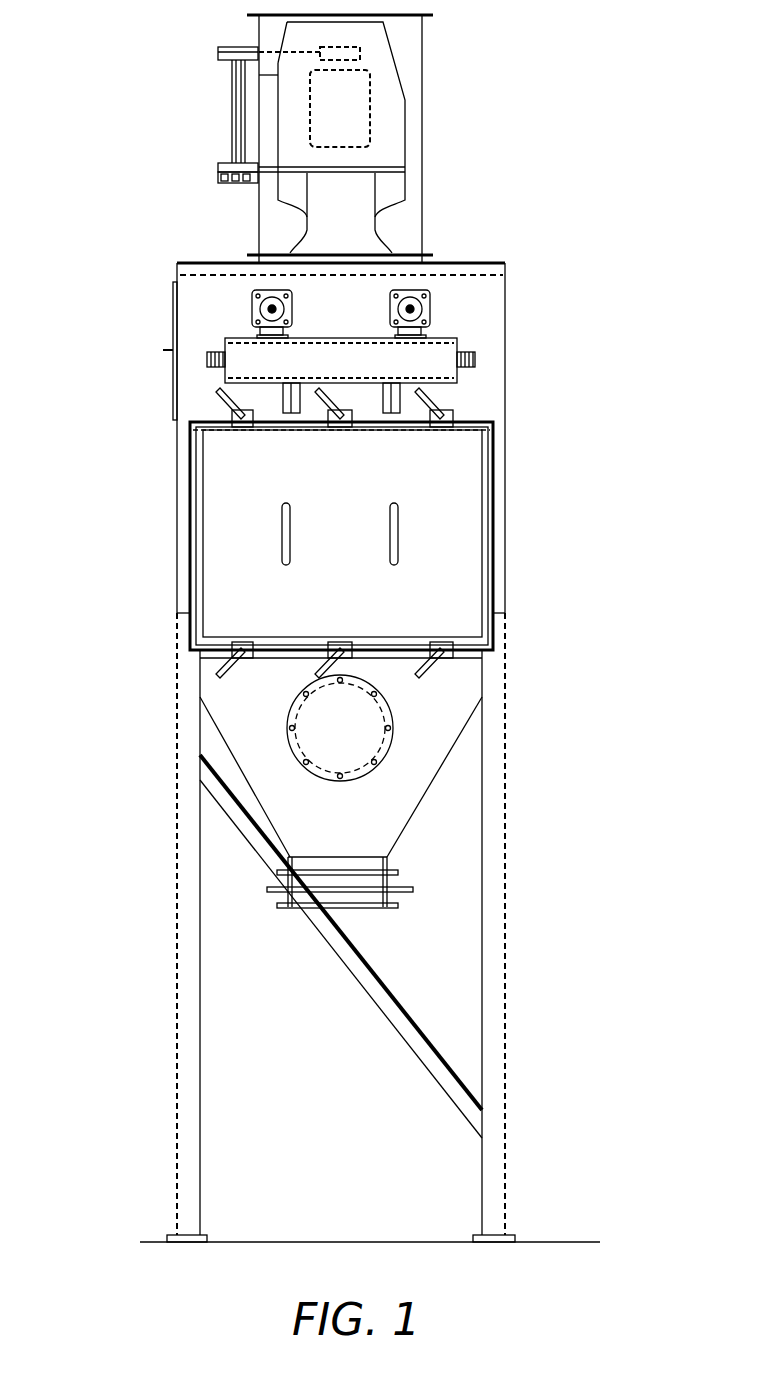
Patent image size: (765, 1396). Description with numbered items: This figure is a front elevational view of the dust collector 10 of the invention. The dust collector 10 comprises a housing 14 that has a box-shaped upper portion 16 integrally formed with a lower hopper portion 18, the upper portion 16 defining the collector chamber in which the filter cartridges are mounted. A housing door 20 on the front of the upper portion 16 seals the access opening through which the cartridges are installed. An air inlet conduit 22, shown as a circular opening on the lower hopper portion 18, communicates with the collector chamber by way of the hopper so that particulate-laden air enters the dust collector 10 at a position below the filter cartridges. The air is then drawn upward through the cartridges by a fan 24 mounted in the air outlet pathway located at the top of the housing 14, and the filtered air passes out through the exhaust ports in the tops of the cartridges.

The dust collector 10 is at (117, 531).
The housing 14 is at (498, 479).
The upper portion 16 is at (493, 543).
The lower hopper portion 18 is at (398, 807).
The housing door 20 is at (443, 593).
The air inlet conduit 22 is at (363, 710).
The fan 24 is at (393, 132).